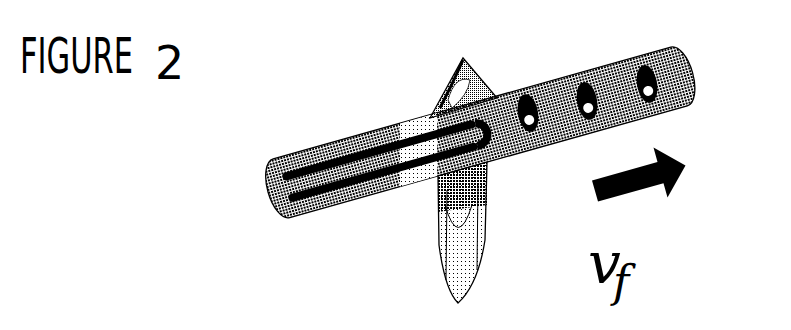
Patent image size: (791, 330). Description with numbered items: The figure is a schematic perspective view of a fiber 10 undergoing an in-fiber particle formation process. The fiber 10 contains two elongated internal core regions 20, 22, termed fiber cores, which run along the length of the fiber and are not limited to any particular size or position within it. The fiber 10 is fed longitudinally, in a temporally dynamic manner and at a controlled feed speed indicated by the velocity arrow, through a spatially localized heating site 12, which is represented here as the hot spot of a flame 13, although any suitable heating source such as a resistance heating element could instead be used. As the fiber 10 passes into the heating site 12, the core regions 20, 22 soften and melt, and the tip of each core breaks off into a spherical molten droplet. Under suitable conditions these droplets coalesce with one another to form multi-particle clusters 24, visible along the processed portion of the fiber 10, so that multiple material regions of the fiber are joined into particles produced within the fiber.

The fiber 10 is at (303, 120).
The spatially localized heating site 12 is at (463, 72).
The flame 13 is at (478, 208).
The elongated internal core region 20 is at (358, 132).
The elongated internal core region 22 is at (383, 184).
The multi-particle clusters 24 is at (534, 88).